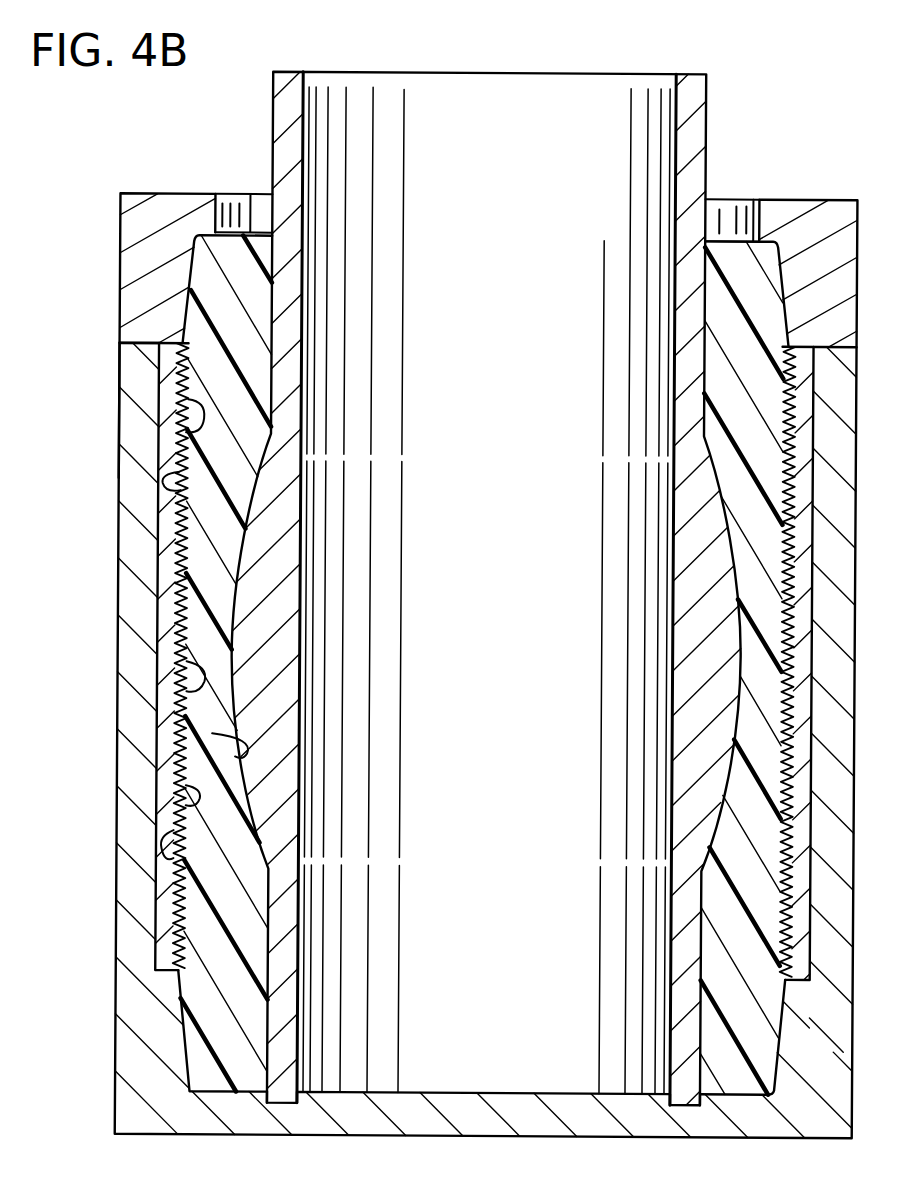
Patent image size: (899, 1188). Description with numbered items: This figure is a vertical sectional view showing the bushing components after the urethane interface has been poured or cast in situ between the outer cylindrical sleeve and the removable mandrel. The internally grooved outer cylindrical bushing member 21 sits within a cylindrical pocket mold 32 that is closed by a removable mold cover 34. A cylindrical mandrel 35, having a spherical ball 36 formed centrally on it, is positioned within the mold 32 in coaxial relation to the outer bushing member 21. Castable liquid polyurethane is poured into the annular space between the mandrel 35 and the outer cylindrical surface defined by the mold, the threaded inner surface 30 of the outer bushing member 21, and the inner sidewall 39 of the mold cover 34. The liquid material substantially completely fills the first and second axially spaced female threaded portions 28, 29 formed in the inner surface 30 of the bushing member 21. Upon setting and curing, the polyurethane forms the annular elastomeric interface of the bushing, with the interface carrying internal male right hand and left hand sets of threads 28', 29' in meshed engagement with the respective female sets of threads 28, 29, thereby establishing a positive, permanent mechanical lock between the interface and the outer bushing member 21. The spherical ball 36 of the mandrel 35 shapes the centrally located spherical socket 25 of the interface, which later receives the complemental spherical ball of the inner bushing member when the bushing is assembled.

The outer cylindrical bushing member 21 is at (140, 576).
The spherical socket 25 is at (213, 735).
The first set of grooves 28 is at (115, 398).
The right hand set of threads 28' is at (313, 431).
The second set of grooves 29 is at (112, 792).
The left hand set of threads 29' is at (312, 819).
The inner cylindrical surface 30 is at (180, 697).
The cylindrical pocket mold 32 is at (137, 375).
The mold cover 34 is at (145, 253).
The cylindrical mandrel 35 is at (283, 128).
The spherical ball 36 is at (253, 638).
The inner sidewall 39 is at (198, 256).